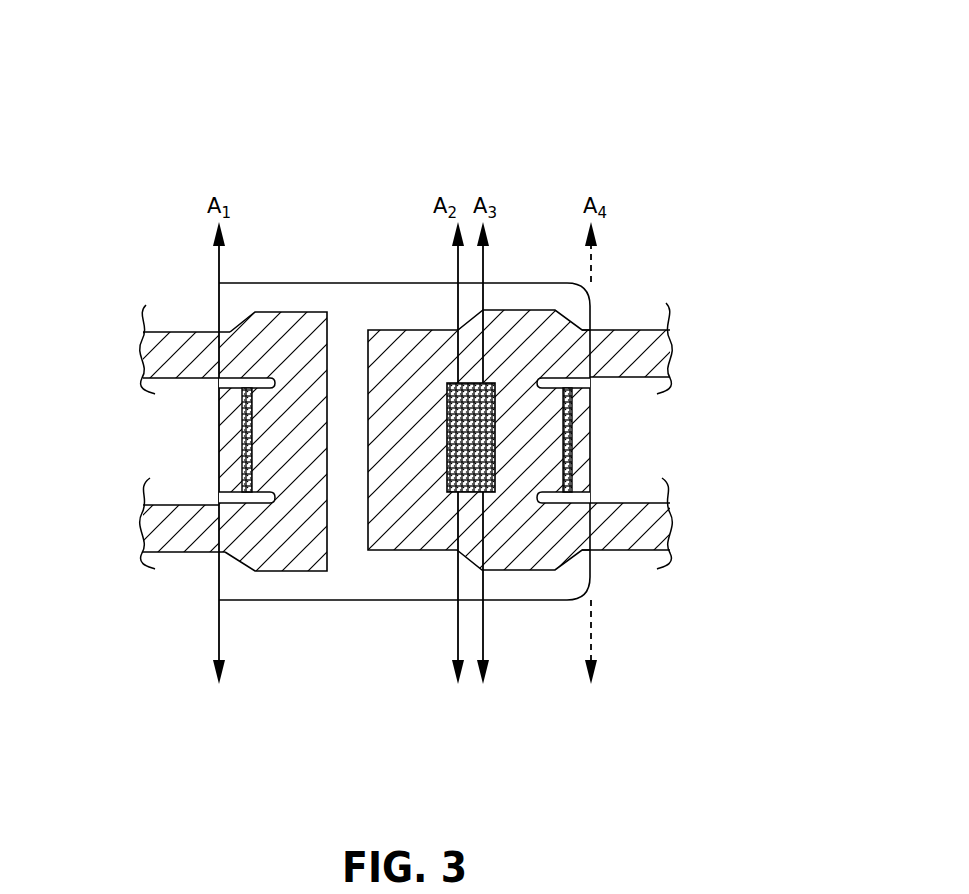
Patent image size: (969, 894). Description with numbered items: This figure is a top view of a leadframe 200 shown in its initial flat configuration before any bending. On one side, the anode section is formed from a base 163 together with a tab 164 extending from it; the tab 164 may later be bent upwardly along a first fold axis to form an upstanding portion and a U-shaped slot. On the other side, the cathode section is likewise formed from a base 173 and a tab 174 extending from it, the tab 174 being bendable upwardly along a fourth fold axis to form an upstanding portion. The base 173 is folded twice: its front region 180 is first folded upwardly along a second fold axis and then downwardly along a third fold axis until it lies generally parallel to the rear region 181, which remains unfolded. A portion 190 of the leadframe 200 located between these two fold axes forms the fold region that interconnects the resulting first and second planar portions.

The leadframe 200 is at (556, 110).
The base 163 is at (295, 323).
The tab 164 is at (230, 412).
The front region 180 is at (398, 555).
The rear region 181 is at (535, 320).
The base 173 is at (522, 555).
The tab 174 is at (582, 482).
The portion 190 is at (473, 560).